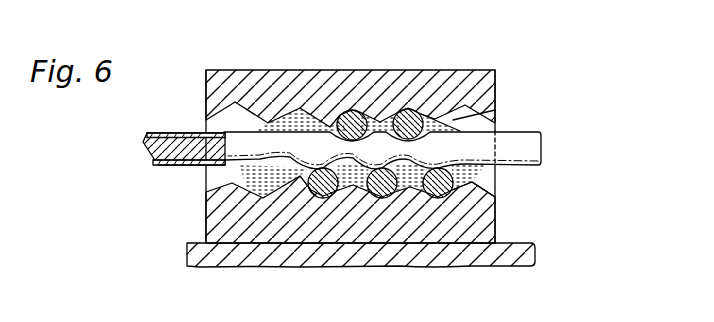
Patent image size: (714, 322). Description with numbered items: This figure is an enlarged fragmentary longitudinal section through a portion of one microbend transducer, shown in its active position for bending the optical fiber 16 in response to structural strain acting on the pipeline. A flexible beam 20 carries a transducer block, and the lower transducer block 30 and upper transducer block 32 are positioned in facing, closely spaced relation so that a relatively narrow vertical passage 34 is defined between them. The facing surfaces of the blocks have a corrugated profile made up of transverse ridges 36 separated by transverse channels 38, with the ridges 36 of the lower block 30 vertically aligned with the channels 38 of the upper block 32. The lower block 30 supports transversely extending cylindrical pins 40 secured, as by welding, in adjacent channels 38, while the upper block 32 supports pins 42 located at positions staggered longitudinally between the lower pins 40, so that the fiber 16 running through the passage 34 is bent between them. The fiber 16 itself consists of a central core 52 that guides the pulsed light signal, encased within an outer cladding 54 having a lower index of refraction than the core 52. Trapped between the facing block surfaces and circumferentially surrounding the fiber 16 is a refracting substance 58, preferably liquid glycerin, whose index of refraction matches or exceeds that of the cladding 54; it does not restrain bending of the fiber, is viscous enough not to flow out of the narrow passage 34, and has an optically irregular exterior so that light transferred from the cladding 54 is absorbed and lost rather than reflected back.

The optical fiber 16 is at (513, 146).
The flexible beam 20 is at (513, 258).
The lower transducer block 30 is at (217, 225).
The upper transducer block 32 is at (480, 80).
The vertical passage 34 is at (198, 174).
The transverse ridges 36 is at (495, 110).
The transverse channels 38 is at (409, 109).
The cylindrical pins 40 is at (320, 197).
The pins 42 is at (353, 111).
The central core 52 is at (158, 147).
The outer cladding 54 is at (170, 133).
The refracting substance 58 is at (298, 120).